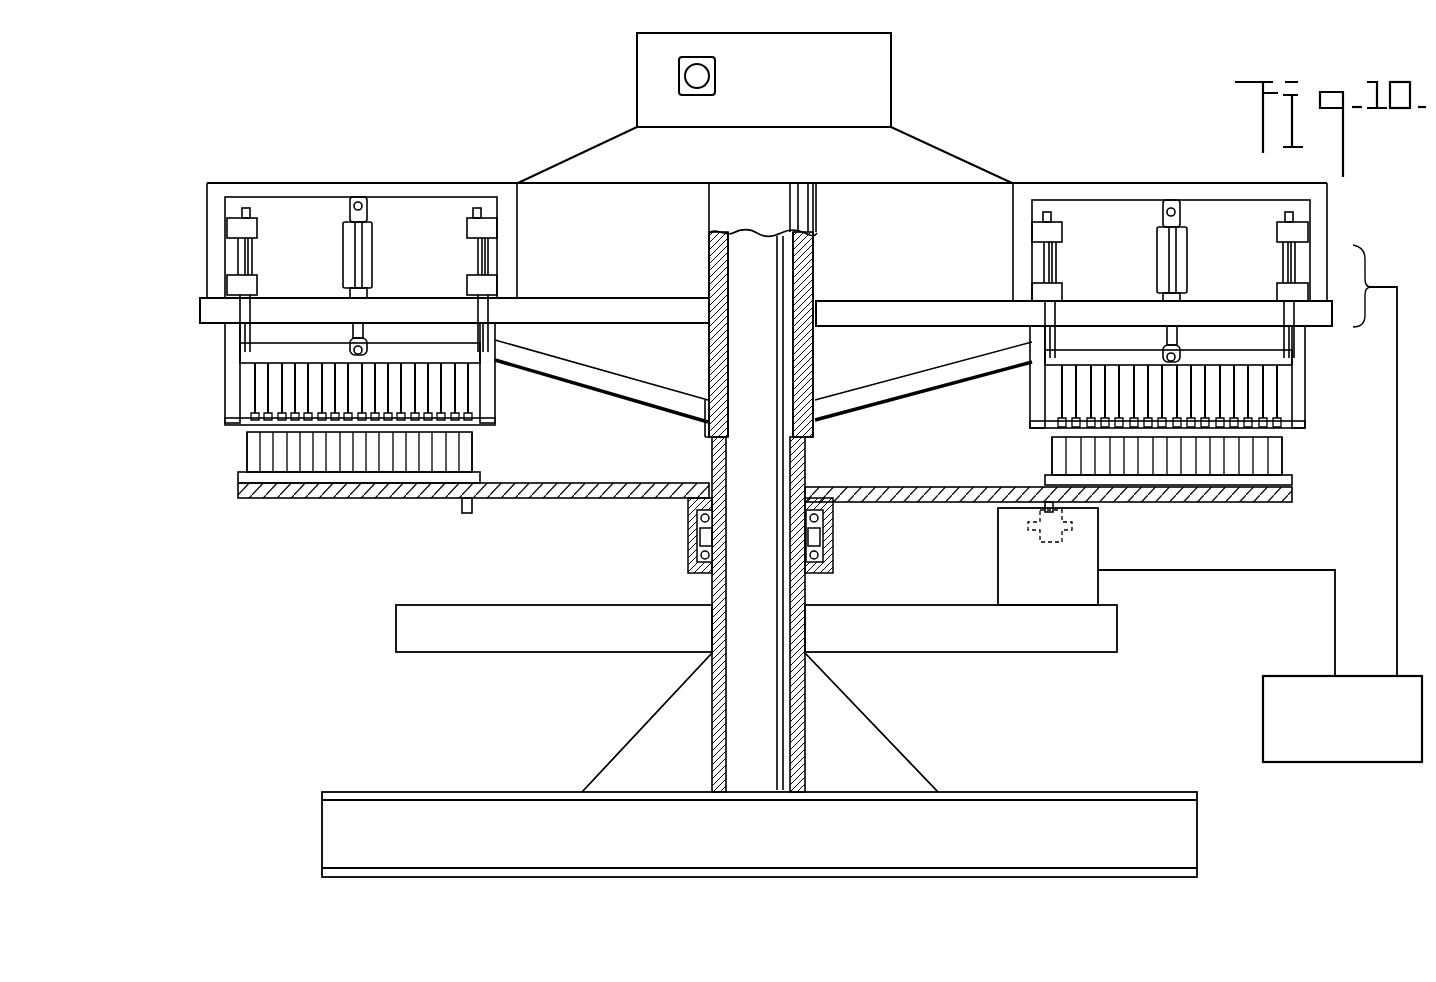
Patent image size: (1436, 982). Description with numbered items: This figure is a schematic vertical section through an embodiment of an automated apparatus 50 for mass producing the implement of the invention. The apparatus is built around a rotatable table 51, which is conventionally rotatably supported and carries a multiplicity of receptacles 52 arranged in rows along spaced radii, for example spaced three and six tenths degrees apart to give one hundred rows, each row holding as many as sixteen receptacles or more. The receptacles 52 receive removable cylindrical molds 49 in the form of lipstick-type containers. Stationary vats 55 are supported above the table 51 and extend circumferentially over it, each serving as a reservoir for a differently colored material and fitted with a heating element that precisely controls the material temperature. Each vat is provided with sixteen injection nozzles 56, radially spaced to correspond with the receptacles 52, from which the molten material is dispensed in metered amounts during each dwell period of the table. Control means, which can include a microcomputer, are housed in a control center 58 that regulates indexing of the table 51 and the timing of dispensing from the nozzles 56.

The removable cylindrical molds 49 is at (248, 432).
The automated apparatus 50 is at (1069, 175).
The rotatable table 51 is at (580, 498).
The receptacles 52 is at (263, 457).
The vats 55 is at (265, 330).
The injection nozzles 56 is at (460, 412).
The control center 58 is at (1297, 680).